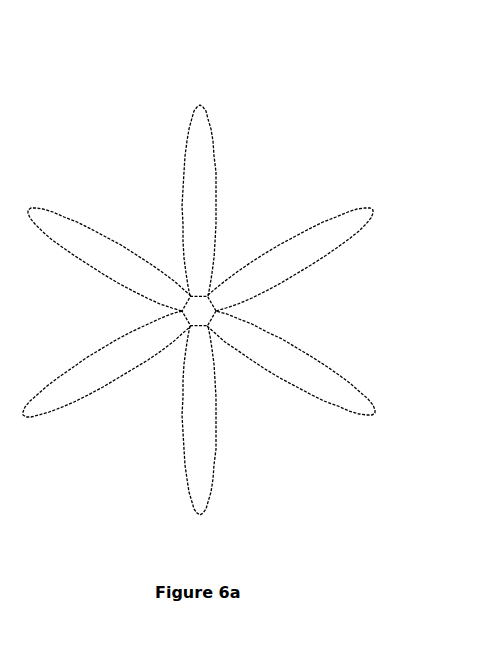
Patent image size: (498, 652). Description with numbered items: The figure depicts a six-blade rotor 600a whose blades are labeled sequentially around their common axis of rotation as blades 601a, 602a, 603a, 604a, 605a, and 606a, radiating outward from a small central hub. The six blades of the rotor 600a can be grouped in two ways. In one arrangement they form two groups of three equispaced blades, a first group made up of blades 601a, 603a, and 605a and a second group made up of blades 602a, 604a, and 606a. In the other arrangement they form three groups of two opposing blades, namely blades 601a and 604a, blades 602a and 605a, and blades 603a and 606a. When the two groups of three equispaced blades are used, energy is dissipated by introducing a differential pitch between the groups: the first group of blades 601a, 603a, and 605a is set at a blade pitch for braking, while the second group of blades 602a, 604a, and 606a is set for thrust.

The six-blade rotor 600a is at (73, 88).
The blade 601a is at (202, 112).
The blade 602a is at (330, 215).
The blade 603a is at (318, 373).
The blade 604a is at (203, 482).
The blade 605a is at (73, 382).
The blade 606a is at (88, 243).